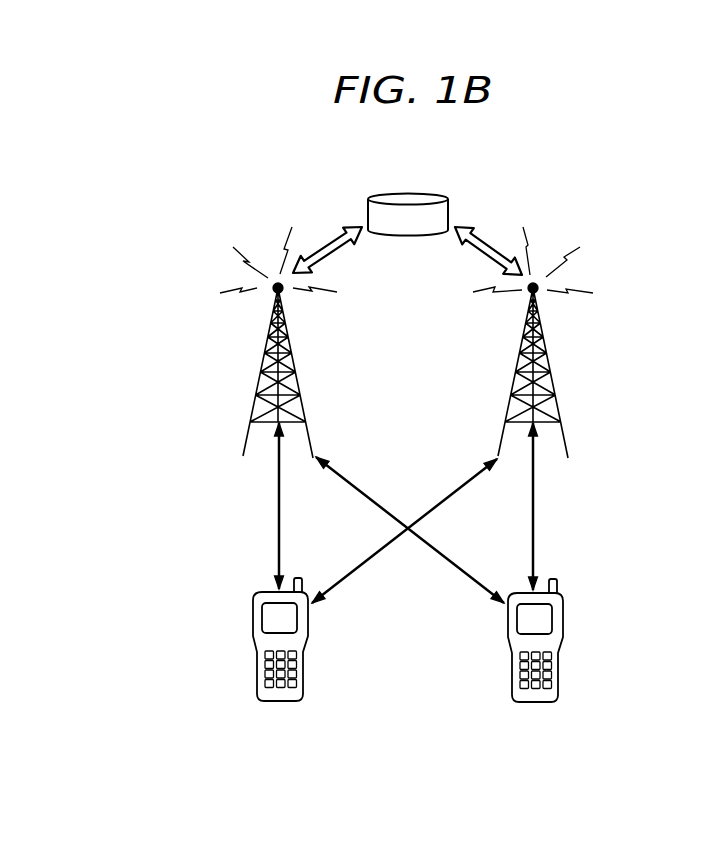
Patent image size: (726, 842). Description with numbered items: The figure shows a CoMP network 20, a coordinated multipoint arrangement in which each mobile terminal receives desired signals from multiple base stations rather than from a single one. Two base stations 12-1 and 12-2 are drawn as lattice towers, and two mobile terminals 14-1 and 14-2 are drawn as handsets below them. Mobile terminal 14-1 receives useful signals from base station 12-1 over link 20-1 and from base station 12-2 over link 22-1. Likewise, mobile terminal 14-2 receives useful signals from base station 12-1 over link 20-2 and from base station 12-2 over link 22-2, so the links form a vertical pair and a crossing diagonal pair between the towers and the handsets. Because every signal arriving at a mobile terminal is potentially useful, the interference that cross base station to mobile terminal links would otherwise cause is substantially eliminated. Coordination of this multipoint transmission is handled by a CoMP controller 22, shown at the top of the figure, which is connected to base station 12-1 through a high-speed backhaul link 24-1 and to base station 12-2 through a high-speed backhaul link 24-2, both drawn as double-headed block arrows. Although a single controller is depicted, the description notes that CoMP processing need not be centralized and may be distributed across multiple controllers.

The CoMP network 20 is at (650, 183).
The CoMP controller 22 is at (420, 166).
The high-speed backhaul link 24-1 is at (336, 240).
The high-speed backhaul link 24-2 is at (480, 241).
The base station 12-1 is at (258, 370).
The base station 12-2 is at (554, 368).
The link 20-1 is at (279, 503).
The link 20-2 is at (364, 493).
The link 22-1 is at (437, 507).
The link 22-2 is at (533, 508).
The mobile terminal 14-1 is at (256, 665).
The mobile terminal 14-2 is at (562, 665).